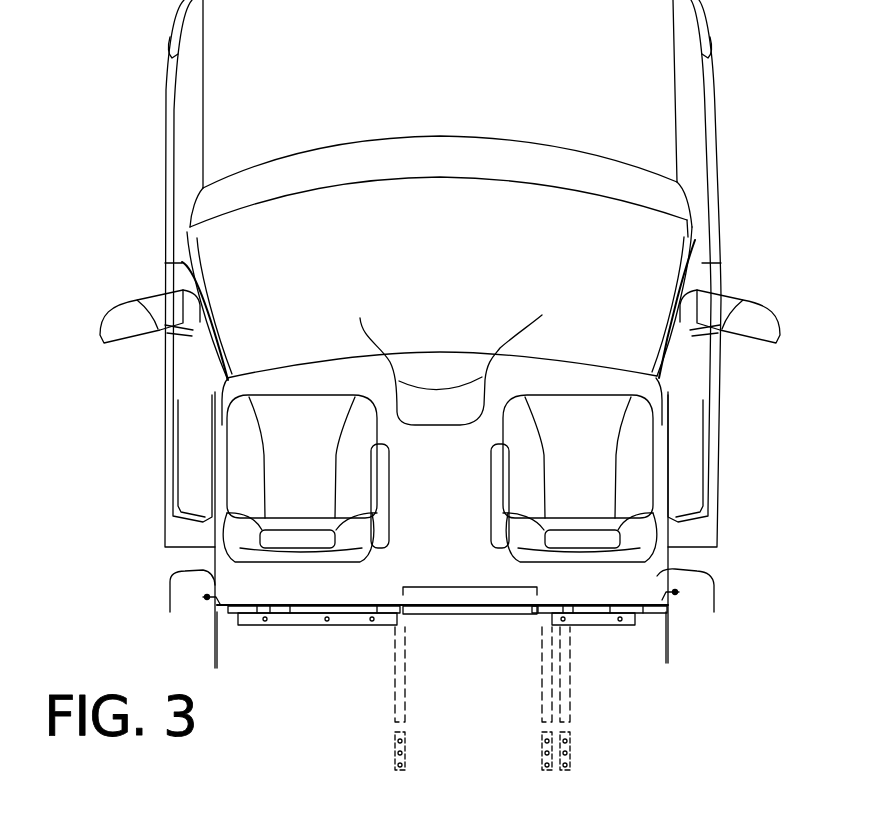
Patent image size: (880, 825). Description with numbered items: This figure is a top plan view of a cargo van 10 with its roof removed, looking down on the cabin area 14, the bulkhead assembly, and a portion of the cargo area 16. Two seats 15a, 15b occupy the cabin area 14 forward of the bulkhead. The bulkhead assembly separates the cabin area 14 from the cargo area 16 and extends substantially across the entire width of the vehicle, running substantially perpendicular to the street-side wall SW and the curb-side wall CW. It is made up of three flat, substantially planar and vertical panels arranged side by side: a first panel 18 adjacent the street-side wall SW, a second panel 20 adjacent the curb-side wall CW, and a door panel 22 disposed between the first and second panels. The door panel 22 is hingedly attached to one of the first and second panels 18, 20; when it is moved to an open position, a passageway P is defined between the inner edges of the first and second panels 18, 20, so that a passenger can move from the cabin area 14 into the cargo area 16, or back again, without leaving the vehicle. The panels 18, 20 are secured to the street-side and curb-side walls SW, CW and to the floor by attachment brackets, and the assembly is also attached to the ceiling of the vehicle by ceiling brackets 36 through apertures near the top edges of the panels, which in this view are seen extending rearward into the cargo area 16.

The cargo van 10 is at (733, 98).
The cabin area 14 is at (454, 494).
The driver seat 15a is at (321, 494).
The passenger seat 15b is at (604, 494).
The cargo area 16 is at (479, 737).
The first panel 18 is at (243, 624).
The second panel 20 is at (643, 611).
The door panel 22 is at (430, 615).
The ceiling brackets 36 is at (407, 741).
The passageway P is at (453, 585).
The street-side wall SW is at (218, 653).
The curb-side wall CW is at (652, 568).